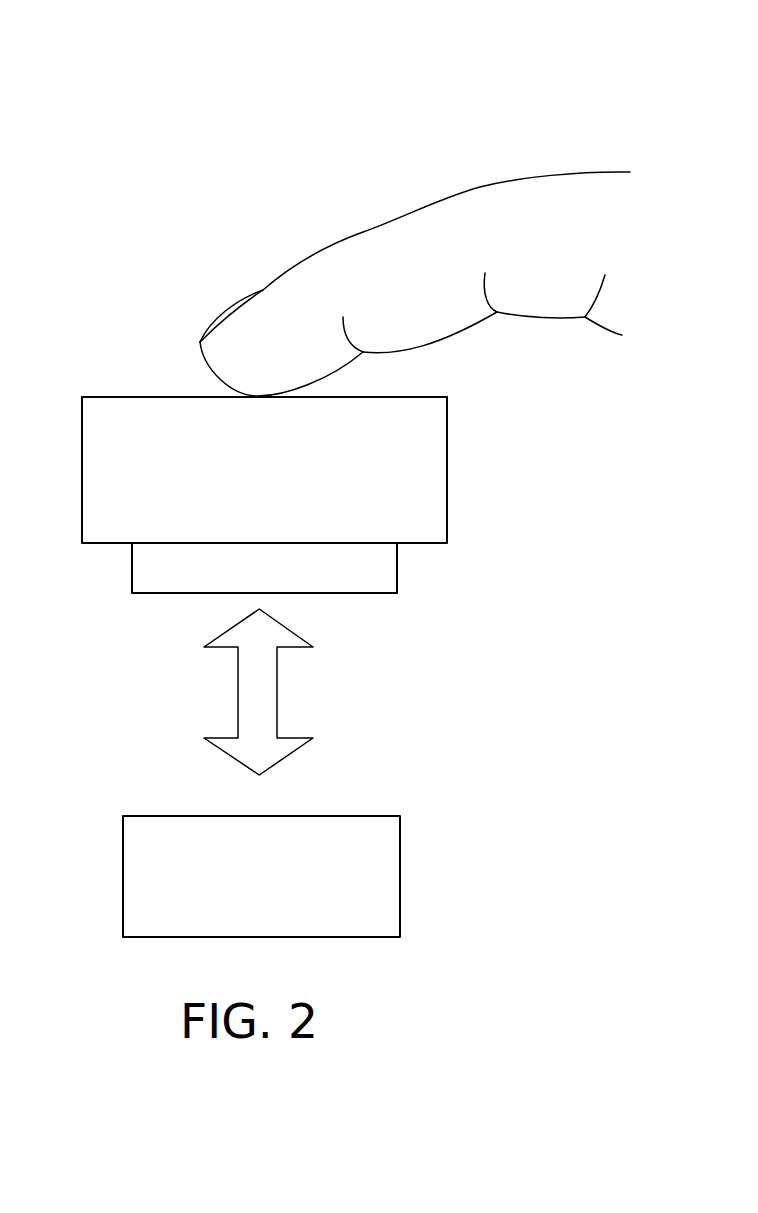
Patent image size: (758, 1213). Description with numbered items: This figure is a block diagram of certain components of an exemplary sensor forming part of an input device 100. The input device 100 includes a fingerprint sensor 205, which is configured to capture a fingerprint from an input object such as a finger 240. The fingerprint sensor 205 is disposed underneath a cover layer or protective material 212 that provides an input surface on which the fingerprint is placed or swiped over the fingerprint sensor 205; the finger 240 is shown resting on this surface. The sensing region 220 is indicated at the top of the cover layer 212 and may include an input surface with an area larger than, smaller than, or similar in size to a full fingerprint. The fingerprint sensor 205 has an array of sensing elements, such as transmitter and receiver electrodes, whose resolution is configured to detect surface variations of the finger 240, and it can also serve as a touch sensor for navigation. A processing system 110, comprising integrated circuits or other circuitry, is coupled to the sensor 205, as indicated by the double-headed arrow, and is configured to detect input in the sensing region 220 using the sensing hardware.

The input device 100 is at (130, 125).
The processing system 110 is at (400, 877).
The fingerprint sensor 205 is at (397, 568).
The cover layer or protective material 212 is at (448, 470).
The sensing region 220 is at (155, 358).
The finger 240 is at (540, 318).